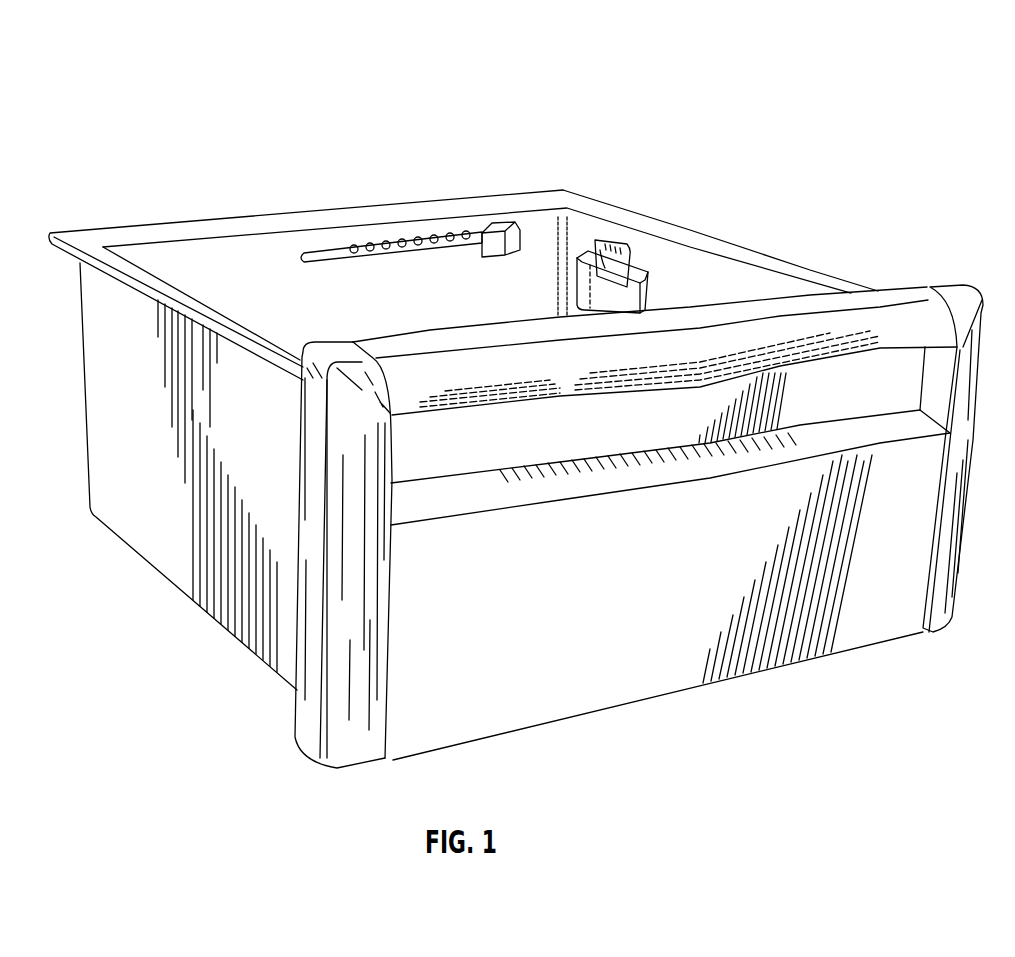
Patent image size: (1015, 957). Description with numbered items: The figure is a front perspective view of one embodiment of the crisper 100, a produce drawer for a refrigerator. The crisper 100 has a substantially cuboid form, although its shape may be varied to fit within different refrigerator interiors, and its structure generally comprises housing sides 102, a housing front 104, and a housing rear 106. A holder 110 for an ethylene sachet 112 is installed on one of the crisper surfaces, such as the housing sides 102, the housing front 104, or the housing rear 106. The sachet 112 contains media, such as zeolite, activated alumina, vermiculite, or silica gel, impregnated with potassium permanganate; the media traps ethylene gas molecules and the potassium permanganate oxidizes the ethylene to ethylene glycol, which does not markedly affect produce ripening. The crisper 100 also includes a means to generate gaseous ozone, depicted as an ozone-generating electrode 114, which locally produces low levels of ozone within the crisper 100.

The crisper 100 is at (131, 126).
The housing sides 102 is at (715, 292).
The housing front 104 is at (532, 665).
The housing rear 106 is at (188, 262).
The holder 110 is at (577, 257).
The ethylene sachet 112 is at (603, 243).
The ozone-generating electrode 114 is at (440, 235).